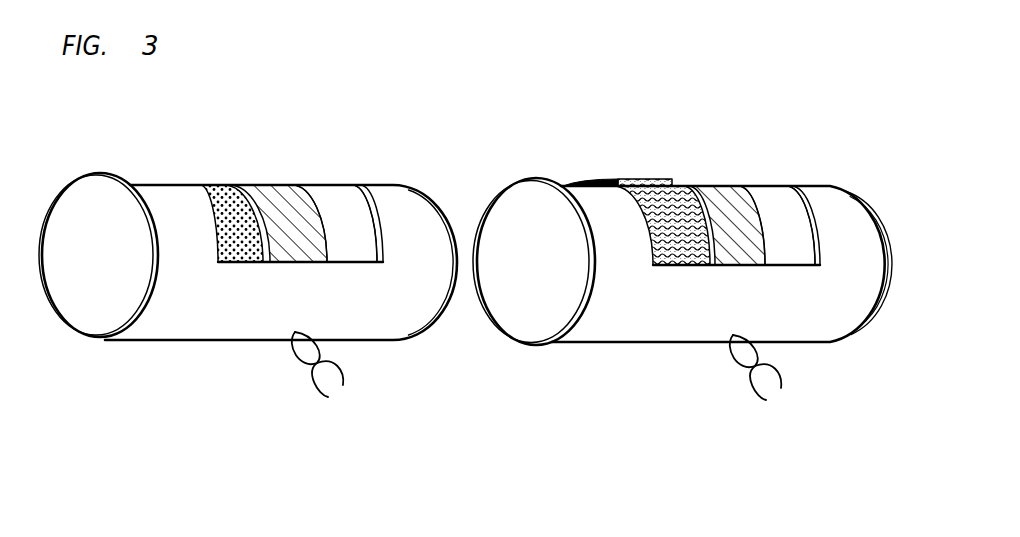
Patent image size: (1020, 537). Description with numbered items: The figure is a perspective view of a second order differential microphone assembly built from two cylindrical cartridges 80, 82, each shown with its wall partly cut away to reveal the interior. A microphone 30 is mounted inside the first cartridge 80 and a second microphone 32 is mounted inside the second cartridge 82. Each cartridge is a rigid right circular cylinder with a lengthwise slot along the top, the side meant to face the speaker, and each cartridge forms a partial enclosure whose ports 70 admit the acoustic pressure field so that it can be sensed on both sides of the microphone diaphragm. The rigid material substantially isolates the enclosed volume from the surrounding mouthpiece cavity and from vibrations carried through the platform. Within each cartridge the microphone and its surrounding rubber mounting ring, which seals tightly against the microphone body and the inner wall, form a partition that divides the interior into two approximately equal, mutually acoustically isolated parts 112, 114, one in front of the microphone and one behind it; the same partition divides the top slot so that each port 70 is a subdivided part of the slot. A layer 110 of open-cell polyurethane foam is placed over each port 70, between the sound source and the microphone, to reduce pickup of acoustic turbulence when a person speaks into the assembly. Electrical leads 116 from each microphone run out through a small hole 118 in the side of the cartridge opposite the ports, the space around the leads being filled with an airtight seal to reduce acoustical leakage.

The microphone 30 is at (217, 247).
The port 70 is at (350, 263).
The cartridge 80 is at (368, 185).
The interior part of cartridge 114 is at (337, 203).
The microphone 32 is at (761, 201).
The cartridge 82 is at (808, 188).
The foam layer 110 is at (677, 266).
The interior part of cartridge 112 is at (597, 236).
The electrical leads 116 is at (762, 350).
The hole 118 is at (736, 338).